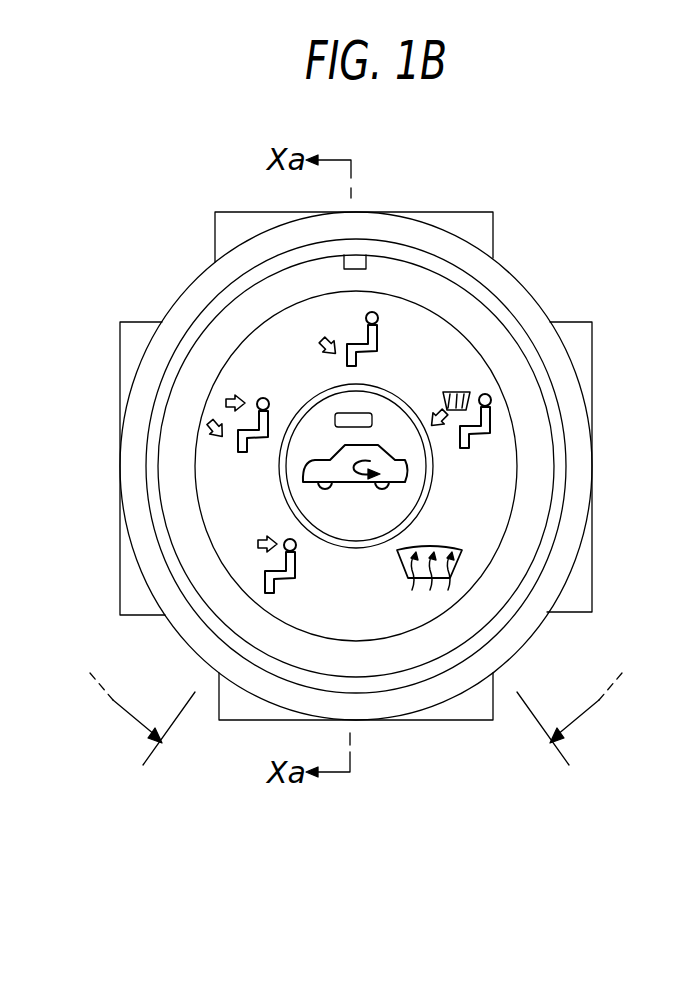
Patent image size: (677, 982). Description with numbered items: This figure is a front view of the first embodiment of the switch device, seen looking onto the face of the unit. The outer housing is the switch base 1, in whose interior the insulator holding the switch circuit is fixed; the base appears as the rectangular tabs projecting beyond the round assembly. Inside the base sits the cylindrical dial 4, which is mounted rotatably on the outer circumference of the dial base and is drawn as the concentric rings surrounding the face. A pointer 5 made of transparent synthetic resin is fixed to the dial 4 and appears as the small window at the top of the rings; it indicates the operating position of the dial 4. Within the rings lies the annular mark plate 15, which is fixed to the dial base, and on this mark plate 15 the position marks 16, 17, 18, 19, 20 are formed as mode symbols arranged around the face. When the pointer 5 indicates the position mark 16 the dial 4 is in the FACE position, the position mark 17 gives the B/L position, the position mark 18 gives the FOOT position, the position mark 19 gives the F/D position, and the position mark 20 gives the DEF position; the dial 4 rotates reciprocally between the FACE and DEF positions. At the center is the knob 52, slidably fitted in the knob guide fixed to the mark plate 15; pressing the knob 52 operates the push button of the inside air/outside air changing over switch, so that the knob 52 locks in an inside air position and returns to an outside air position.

The switch base 1 is at (458, 212).
The dial 4 is at (557, 431).
The pointer 5 is at (363, 262).
The mark plate 15 is at (205, 490).
The position mark 16 is at (295, 576).
The position mark 17 is at (250, 447).
The position mark 18 is at (390, 347).
The position mark 19 is at (474, 440).
The position mark 20 is at (400, 566).
The knob 52 is at (415, 490).